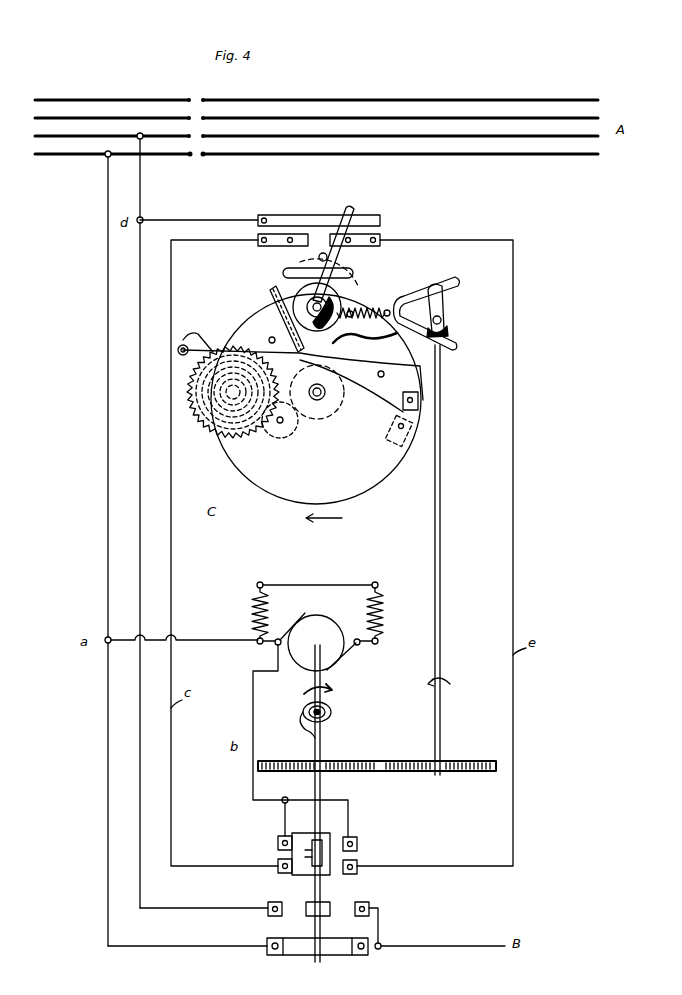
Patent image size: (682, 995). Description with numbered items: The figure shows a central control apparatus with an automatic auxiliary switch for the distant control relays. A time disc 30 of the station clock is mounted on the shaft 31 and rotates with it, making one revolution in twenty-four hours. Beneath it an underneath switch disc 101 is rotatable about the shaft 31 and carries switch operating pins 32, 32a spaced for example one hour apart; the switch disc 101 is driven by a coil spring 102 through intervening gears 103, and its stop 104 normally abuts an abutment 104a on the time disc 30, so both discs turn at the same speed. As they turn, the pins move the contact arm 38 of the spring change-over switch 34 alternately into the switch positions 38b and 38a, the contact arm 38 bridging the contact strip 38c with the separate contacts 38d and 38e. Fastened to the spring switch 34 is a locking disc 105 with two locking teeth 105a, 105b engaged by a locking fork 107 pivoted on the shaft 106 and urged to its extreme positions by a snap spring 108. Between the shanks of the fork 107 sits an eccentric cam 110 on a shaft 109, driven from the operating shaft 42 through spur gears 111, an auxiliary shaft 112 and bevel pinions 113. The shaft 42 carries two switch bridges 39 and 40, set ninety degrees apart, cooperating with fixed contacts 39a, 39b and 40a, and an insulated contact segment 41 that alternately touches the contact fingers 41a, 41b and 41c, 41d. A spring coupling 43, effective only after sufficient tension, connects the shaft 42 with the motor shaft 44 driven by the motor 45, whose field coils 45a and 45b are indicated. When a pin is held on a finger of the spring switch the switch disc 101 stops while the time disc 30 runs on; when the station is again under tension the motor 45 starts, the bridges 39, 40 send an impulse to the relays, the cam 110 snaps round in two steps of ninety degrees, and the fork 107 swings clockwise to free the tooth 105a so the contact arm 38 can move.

The time disc 30 is at (368, 484).
The shaft 31 is at (318, 400).
The switch operating pin 32 is at (268, 301).
The switch operating pin 32a is at (272, 337).
The spring change-over switch 34 is at (360, 300).
The contact arm 38 is at (350, 207).
The switch position 38a is at (384, 200).
The switch position 38b is at (262, 215).
The contact strip 38c is at (300, 215).
The separate contact 38d is at (270, 246).
The separate contact 38e is at (380, 238).
The switch bridge 39 is at (330, 906).
The fixed contact 39a is at (284, 897).
The fixed contact 39b is at (368, 902).
The switch bridge 40 is at (338, 956).
The fixed contact 40a is at (270, 956).
The insulated contact segment 41 is at (304, 833).
The contact finger 41a is at (278, 843).
The contact finger 41b is at (278, 866).
The contact finger 41c is at (357, 841).
The contact finger 41d is at (357, 866).
The operating shaft 42 is at (321, 750).
The spring coupling 43 is at (331, 712).
The motor shaft 44 is at (326, 697).
The motor 45 is at (328, 624).
The field coil 45a is at (252, 612).
The field coil 45b is at (384, 612).
The switch disc 101 is at (424, 380).
The coil spring 102 is at (205, 432).
The intervening gears 103 is at (298, 436).
The stop 104 is at (418, 405).
The abutment 104a is at (412, 438).
The locking disc 105 is at (305, 296).
The locking tooth 105a is at (350, 272).
The locking tooth 105b is at (318, 330).
The shaft 106 is at (408, 337).
The locking fork 107 is at (346, 338).
The snap spring 108 is at (382, 311).
The shaft 109 is at (441, 320).
The eccentric cam 110 is at (444, 300).
The spur gears 111 is at (418, 774).
The auxiliary shaft 112 is at (441, 572).
The bevel pinions 113 is at (450, 336).